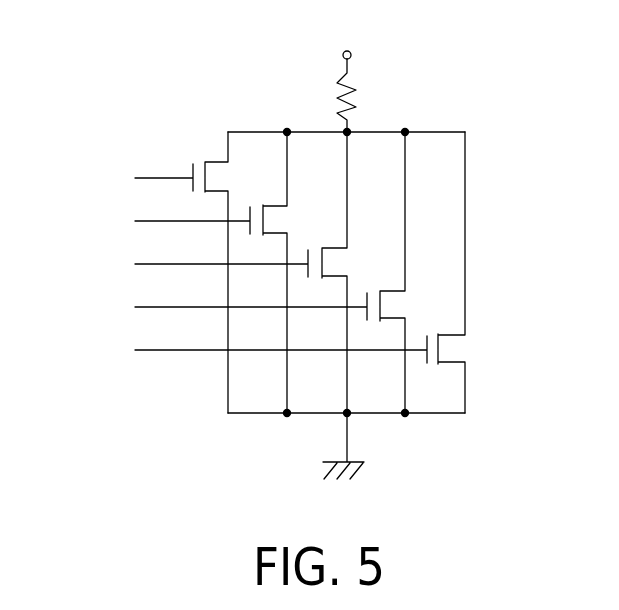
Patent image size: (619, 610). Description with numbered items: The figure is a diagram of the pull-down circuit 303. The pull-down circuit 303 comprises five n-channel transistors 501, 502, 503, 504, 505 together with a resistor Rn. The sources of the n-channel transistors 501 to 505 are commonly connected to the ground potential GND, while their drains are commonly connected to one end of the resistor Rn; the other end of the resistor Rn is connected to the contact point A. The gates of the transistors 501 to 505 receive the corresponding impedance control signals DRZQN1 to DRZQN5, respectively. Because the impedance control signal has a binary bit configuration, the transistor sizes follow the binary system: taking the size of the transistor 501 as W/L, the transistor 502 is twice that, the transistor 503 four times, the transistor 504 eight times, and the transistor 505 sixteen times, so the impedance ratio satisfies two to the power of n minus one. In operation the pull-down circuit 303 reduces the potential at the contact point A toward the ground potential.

The pull-down circuit 303 is at (545, 93).
The n-channel transistor 501 is at (218, 161).
The n-channel transistor 502 is at (273, 205).
The n-channel transistor 503 is at (330, 247).
The n-channel transistor 504 is at (392, 289).
The n-channel transistor 505 is at (450, 334).
The contact point A is at (352, 55).